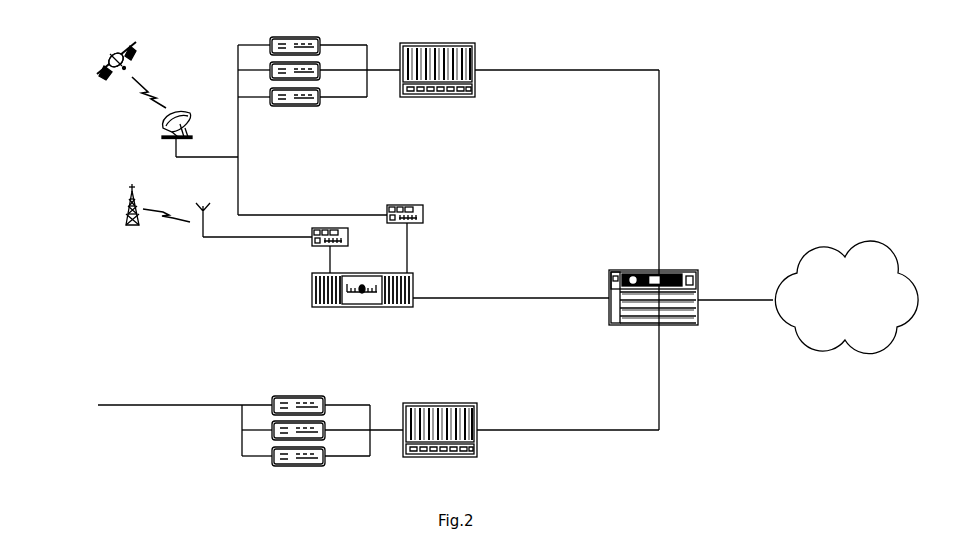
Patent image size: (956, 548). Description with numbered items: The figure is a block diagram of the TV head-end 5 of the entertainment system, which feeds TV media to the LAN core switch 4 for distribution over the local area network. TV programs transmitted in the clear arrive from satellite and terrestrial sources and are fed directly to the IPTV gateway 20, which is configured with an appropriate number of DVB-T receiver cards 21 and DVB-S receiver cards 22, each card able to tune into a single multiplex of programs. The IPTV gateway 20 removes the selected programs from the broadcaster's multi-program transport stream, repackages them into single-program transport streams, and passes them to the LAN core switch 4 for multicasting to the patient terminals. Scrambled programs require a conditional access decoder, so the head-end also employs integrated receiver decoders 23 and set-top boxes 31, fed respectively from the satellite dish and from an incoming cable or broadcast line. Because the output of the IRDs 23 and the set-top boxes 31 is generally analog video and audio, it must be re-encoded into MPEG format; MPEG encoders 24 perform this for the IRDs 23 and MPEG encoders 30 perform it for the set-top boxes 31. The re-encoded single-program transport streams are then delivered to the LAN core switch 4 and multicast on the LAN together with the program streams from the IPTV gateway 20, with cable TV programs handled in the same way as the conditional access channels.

The LAN core switch 4 is at (720, 275).
The TV head-end 5 is at (507, 259).
The IPTV gateway 20 is at (312, 287).
The DVB-T PCI receiver card 21 is at (327, 248).
The DVB-S PCI receiver card 22 is at (407, 205).
The IRDs (Integrated Receiver Decoders) 23 is at (322, 42).
The MPEG encoders 24 is at (475, 57).
The MPEG encoders 30 is at (477, 440).
The set-top boxes 31 is at (293, 466).